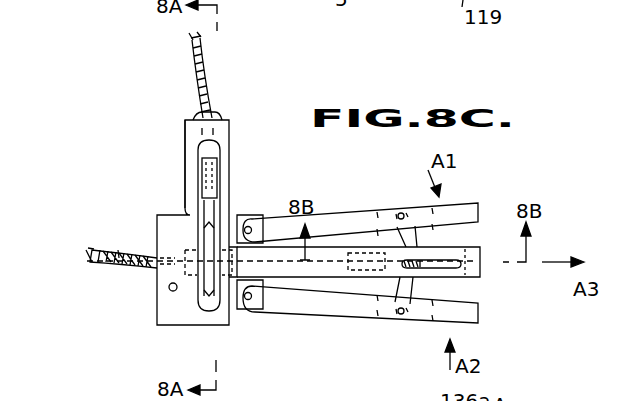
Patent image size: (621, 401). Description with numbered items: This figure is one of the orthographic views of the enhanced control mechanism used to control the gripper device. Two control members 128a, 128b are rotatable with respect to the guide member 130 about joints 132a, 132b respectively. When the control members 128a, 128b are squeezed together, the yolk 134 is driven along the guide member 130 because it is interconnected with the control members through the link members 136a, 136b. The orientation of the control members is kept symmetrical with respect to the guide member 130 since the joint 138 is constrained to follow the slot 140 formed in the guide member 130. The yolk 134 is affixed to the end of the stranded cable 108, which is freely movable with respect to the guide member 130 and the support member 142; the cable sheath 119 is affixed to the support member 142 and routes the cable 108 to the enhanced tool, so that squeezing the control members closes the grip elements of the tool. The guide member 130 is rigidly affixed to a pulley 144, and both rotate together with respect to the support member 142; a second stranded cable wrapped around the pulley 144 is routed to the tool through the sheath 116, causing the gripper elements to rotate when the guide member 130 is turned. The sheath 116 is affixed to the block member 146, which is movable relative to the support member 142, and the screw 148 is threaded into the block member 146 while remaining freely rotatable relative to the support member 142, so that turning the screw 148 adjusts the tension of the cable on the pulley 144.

The stranded cable 108 is at (121, 271).
The sheath 116 is at (212, 65).
The cable sheath 119 is at (118, 250).
The control member 128a is at (463, 202).
The control member 128b is at (478, 320).
The guide member 130 is at (333, 278).
The joint 132a is at (250, 226).
The joint 132b is at (248, 300).
The yolk 134 is at (372, 255).
The link member 136a is at (418, 226).
The link member 136b is at (392, 290).
The joint 138 is at (420, 262).
The slot 140 is at (446, 272).
The support member 142 is at (157, 298).
The pulley 144 is at (207, 312).
The block member 146 is at (200, 180).
The screw 148 is at (218, 115).